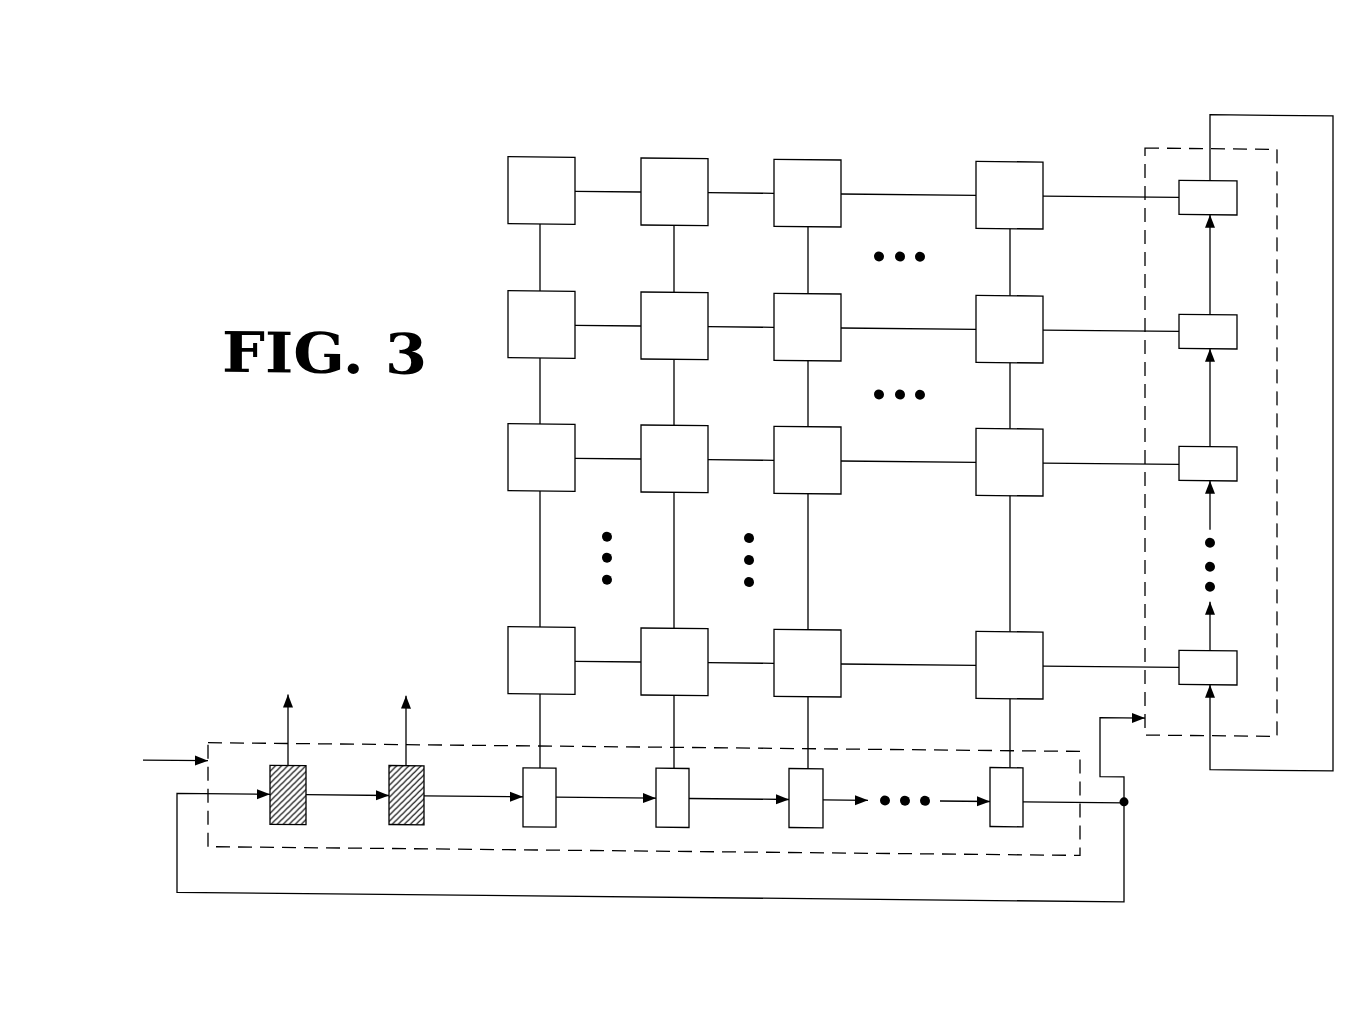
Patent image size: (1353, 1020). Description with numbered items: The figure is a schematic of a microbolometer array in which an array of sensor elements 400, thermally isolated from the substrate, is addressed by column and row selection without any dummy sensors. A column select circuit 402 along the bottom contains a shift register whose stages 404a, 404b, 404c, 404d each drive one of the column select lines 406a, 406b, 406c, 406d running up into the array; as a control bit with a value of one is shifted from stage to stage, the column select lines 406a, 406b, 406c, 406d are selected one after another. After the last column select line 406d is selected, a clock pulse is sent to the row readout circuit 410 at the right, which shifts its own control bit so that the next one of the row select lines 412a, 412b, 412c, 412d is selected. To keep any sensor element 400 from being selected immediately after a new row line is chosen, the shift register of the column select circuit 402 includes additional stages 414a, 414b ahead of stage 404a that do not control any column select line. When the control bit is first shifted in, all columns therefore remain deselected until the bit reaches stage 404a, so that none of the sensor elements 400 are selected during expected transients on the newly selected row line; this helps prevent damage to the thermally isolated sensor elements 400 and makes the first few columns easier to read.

The sensor elements 400 is at (467, 124).
The column select circuit 402 is at (990, 840).
The stage 404a is at (545, 812).
The stage 404b is at (678, 811).
The stage 404c is at (812, 810).
The stage 404d is at (1015, 808).
The column select line 406a is at (540, 725).
The column select line 406b is at (674, 729).
The column select line 406c is at (808, 732).
The column select line 406d is at (1010, 734).
The row readout circuit 410 is at (1265, 678).
The row select line 412a is at (1100, 661).
The row select line 412b is at (1095, 457).
The row select line 412c is at (1095, 325).
The row select line 412d is at (1105, 191).
The additional stage 414a is at (298, 817).
The additional stage 414b is at (415, 816).